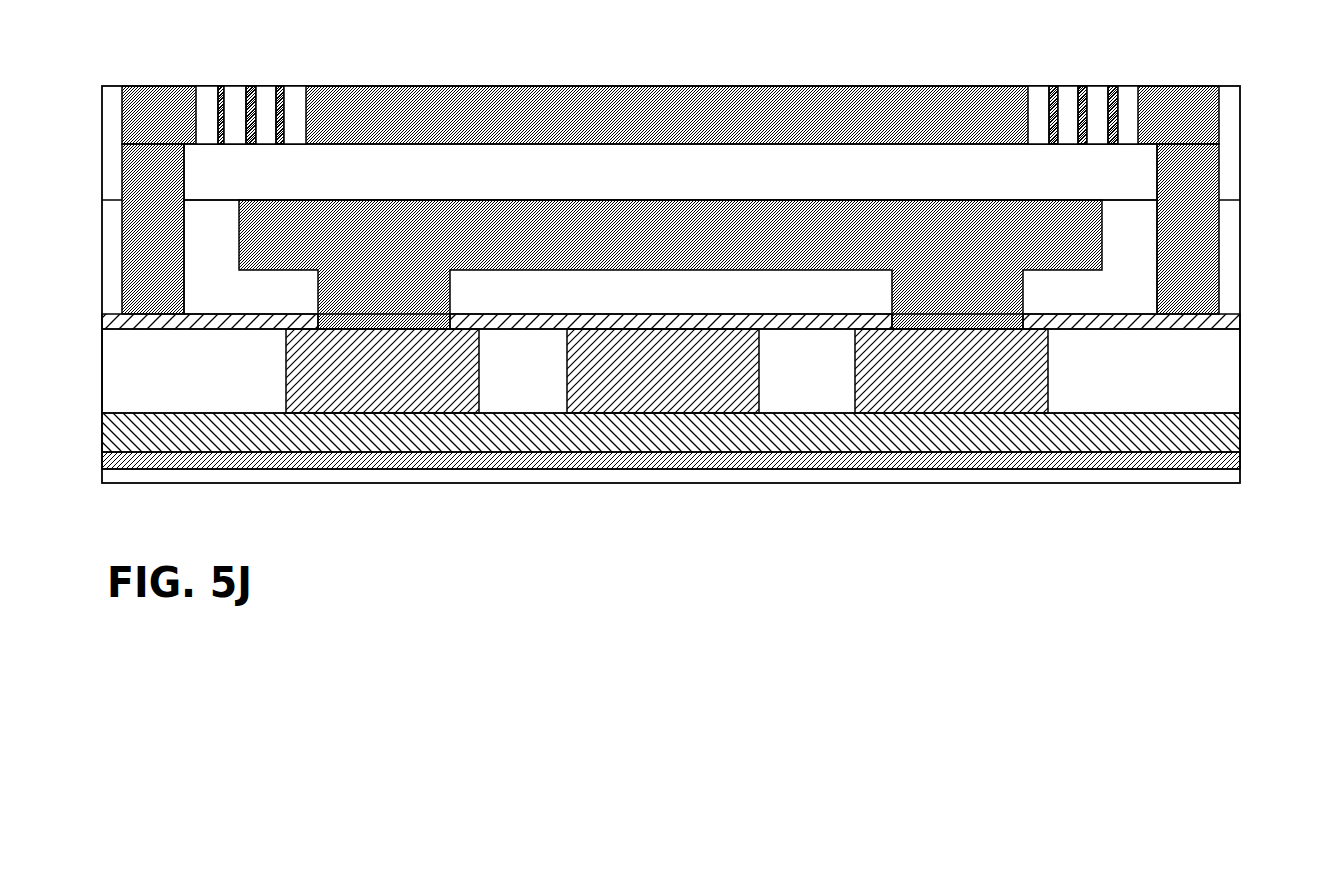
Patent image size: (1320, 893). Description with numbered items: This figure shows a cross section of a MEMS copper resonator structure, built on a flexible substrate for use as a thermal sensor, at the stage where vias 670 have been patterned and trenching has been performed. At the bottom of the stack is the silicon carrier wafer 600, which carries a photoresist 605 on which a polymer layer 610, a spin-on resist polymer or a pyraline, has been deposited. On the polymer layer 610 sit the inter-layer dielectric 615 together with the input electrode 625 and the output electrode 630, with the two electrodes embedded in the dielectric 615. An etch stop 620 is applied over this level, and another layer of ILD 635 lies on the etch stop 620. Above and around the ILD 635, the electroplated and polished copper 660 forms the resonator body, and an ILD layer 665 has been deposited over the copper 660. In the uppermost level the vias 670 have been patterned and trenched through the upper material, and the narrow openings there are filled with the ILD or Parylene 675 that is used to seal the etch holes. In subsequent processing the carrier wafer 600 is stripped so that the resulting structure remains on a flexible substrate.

The silicon carrier wafer 600 is at (1057, 484).
The photoresist 605 is at (1230, 462).
The polymer layer 610 is at (1227, 430).
The inter-layer dielectric 615 is at (1233, 355).
The etch stop 620 is at (818, 313).
The input electrode 625 is at (641, 380).
The output electrode 630 is at (366, 382).
The ILD layer 635 is at (1233, 245).
The copper 660 is at (696, 243).
The ILD layer 665 is at (1233, 151).
The vias 670 is at (145, 82).
The ILD or Parylene 675 is at (212, 83).